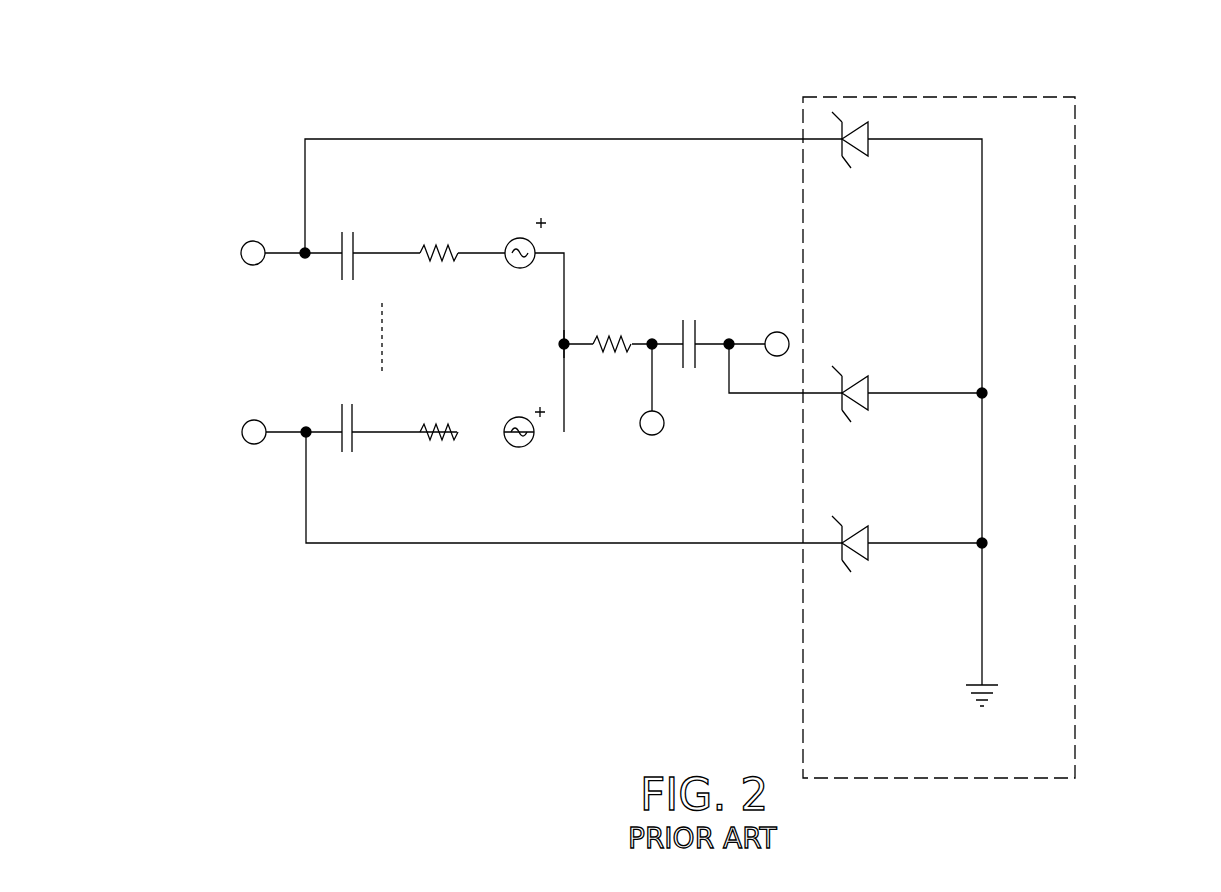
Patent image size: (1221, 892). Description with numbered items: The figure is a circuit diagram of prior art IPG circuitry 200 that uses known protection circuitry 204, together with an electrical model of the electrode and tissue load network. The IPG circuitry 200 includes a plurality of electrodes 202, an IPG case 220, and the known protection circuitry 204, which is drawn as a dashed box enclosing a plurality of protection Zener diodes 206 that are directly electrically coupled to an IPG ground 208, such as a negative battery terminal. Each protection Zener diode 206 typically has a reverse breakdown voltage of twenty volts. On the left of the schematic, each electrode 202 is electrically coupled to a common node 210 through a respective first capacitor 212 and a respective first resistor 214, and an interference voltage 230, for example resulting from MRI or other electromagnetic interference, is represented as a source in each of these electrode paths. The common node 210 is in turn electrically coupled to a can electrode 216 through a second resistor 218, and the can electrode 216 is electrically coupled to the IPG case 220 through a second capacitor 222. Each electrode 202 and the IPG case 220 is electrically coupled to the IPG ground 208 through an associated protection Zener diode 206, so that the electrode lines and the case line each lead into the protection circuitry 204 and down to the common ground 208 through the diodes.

The IPG circuitry 200 is at (632, 105).
The electrode 202 is at (245, 243).
The known protection circuitry 204 is at (1075, 108).
The protection Zener diode 206 is at (868, 153).
The IPG ground 208 is at (984, 683).
The common node 210 is at (568, 335).
The first capacitor 212 is at (354, 238).
The first resistor 214 is at (433, 240).
The can electrode 216 is at (665, 423).
The second resistor 218 is at (608, 333).
The IPG case 220 is at (790, 337).
The second capacitor 222 is at (700, 330).
The interference voltage 230 is at (513, 238).